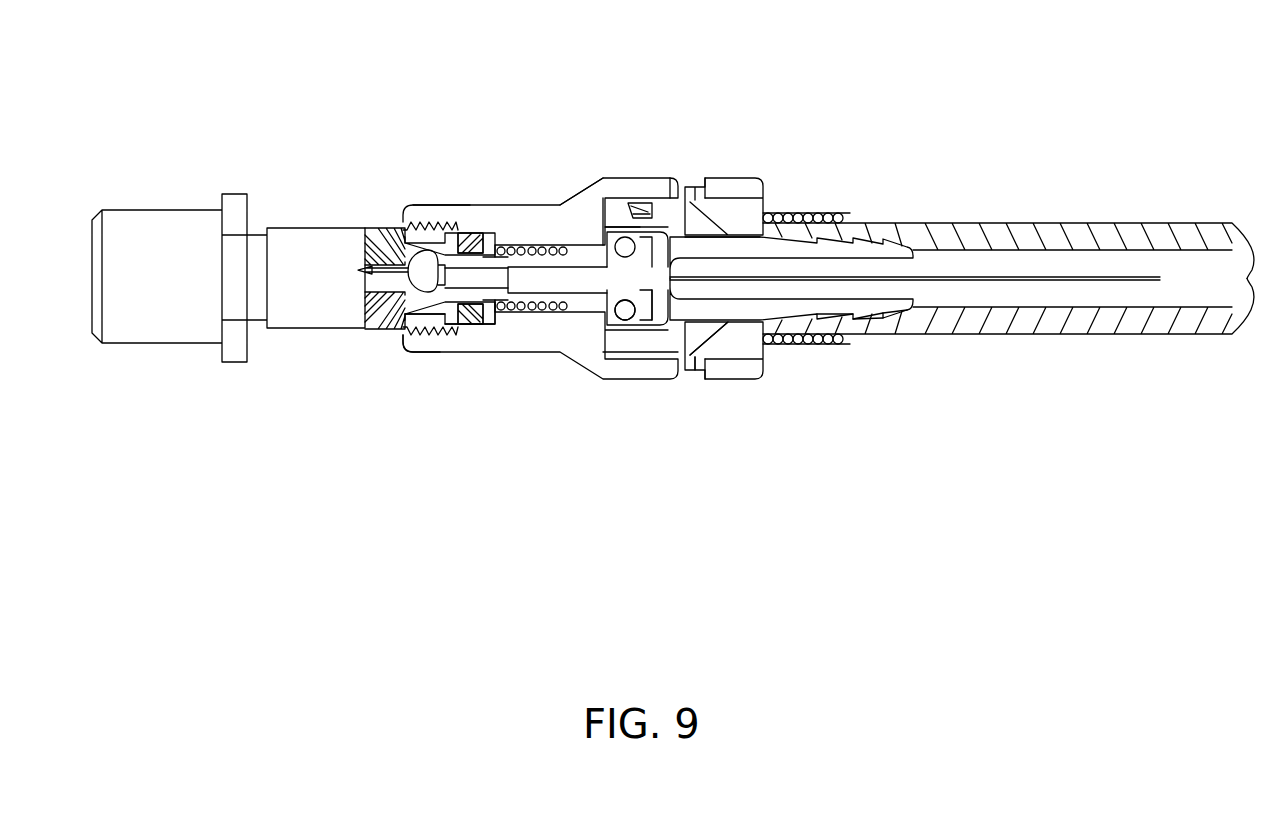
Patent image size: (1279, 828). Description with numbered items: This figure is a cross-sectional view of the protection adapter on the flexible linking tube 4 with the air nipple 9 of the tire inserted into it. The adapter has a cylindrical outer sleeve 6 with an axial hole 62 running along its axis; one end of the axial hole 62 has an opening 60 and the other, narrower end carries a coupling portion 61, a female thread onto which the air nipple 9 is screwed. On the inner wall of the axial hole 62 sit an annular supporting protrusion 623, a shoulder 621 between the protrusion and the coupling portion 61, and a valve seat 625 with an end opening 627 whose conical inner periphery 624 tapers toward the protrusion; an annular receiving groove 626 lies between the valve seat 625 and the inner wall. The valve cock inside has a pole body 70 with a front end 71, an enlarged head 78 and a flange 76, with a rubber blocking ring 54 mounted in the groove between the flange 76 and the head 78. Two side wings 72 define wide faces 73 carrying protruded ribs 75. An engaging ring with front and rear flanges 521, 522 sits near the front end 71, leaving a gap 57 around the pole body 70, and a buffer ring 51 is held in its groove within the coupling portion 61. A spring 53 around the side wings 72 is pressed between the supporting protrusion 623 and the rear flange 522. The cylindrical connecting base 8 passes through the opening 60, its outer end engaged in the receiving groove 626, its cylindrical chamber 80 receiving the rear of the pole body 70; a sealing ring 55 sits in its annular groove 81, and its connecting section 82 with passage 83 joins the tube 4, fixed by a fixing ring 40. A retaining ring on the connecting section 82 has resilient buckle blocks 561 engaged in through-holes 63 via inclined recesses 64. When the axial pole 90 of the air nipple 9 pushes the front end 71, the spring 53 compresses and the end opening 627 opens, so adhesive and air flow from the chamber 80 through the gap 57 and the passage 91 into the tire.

The flexible linking tube 4 is at (1110, 240).
The cylindrical outer sleeve 6 is at (668, 187).
The cylindrical connecting base 8 is at (687, 380).
The air nipple 9 is at (178, 303).
The fixing ring 40 is at (812, 340).
The buffer ring 51 is at (463, 235).
The spring 53 is at (472, 232).
The blocking ring 54 is at (605, 325).
The sealing ring 55 is at (645, 325).
The gap 57 is at (430, 226).
The opening 60 is at (767, 202).
The coupling portion 61 is at (408, 353).
The axial hole 62 is at (495, 352).
The through-holes 63 is at (685, 187).
The inclined recesses 64 is at (767, 205).
The pole body 70 is at (430, 322).
The front end 71 is at (423, 312).
The side wings 72 is at (527, 293).
The wide faces 73 is at (478, 322).
The protruded ribs 75 is at (520, 247).
The flange 76 is at (545, 293).
The enlarged head 78 is at (663, 380).
The cylindrical chamber 80 is at (700, 237).
The annular groove 81 is at (642, 203).
The connecting section 82 is at (870, 312).
The passage 83 is at (875, 268).
The axial pole 90 is at (363, 290).
The passage 91 is at (387, 230).
The front flange 521 is at (467, 324).
The rear flange 522 is at (480, 330).
The resilient buckle blocks 561 is at (695, 190).
The shoulder 621 is at (452, 232).
The annular supporting protrusion 623 is at (575, 215).
The conical inner periphery 624 is at (623, 352).
The valve seat 625 is at (583, 225).
The annular receiving groove 626 is at (605, 232).
The end opening 627 is at (640, 217).